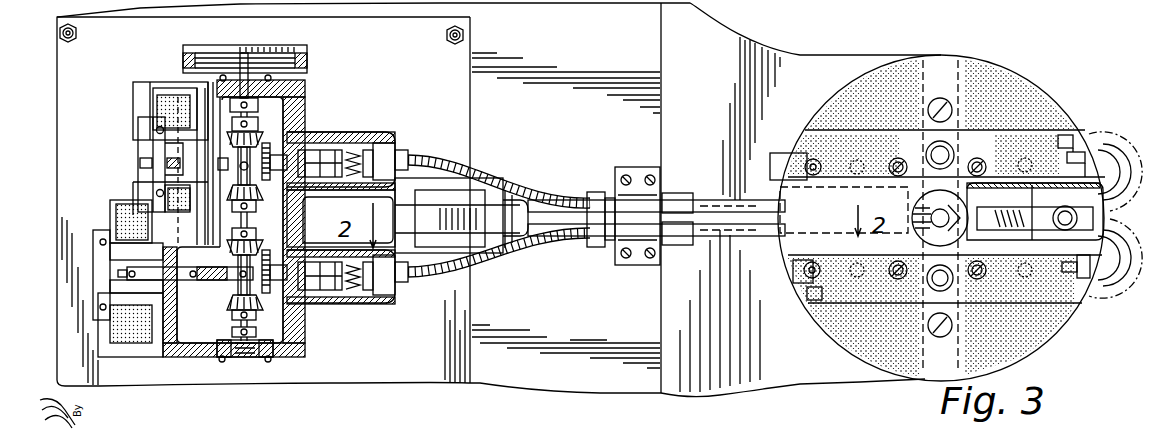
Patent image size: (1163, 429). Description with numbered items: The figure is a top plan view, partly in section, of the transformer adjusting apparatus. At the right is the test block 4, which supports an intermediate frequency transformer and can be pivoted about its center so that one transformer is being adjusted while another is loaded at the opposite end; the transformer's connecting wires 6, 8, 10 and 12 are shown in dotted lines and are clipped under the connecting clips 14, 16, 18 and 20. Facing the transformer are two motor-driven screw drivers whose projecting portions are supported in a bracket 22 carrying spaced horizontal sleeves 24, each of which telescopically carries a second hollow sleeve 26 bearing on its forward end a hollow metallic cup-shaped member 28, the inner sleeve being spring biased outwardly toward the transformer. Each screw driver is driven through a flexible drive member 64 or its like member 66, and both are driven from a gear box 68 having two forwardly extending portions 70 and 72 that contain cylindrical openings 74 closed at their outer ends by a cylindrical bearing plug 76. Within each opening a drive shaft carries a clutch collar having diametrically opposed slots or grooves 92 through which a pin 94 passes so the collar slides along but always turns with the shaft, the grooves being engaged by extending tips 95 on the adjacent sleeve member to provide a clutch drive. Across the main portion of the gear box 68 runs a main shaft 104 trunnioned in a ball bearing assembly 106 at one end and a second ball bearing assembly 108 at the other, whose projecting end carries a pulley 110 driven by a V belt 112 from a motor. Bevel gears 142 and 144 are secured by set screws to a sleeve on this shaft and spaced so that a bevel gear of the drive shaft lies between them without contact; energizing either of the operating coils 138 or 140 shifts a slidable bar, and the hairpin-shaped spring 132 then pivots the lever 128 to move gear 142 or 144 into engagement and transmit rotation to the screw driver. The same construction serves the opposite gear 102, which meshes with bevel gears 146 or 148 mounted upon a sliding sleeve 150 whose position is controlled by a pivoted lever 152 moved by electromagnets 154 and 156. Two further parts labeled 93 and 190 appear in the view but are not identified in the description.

The test block 4 is at (1050, 337).
The connecting wire 6 is at (1140, 150).
The connecting wire 8 is at (1130, 210).
The connecting wire 10 is at (1150, 236).
The connecting wire 12 is at (1118, 272).
The connecting clip 14 is at (1068, 132).
The connecting clip 16 is at (1090, 160).
The connecting clip 18 is at (1075, 268).
The connecting clip 20 is at (1080, 290).
The bracket 22 is at (640, 265).
The horizontal sleeve 24 is at (685, 235).
The second hollow sleeve 26 is at (717, 200).
The cup-shaped member 28 is at (760, 200).
The flexible drive member 64 is at (512, 257).
The flexible driving member 66 is at (518, 190).
The gear box 68 is at (303, 347).
The forwardly extending portion 70 is at (375, 303).
The forwardly extending portion 72 is at (322, 170).
The cylindrical opening 74 is at (384, 143).
The cylindrical bearing plug 76 is at (388, 148).
The diametrically opposed grooves 92 is at (320, 172).
The upper piston 93 is at (330, 165).
The pin 94 is at (335, 303).
The extending tips 95 is at (316, 188).
The bevel gear 102 is at (283, 160).
The main shaft 104 is at (230, 323).
The ball bearing assembly 106 is at (240, 360).
The second ball bearing assembly 108 is at (241, 78).
The pulley 110 is at (285, 53).
The V belt 112 is at (303, 58).
The lever 128 is at (170, 152).
The spring 132 is at (140, 163).
The operating coil 138 is at (112, 215).
The operating coil 140 is at (132, 340).
The bevel gear 142 is at (227, 300).
The bevel gear 144 is at (240, 243).
The bevel gear 146 is at (253, 133).
The bevel gear 148 is at (248, 200).
The sliding sleeve 150 is at (240, 152).
The pivoted lever 152 is at (218, 165).
The electromagnet 154 is at (170, 97).
The electromagnet 156 is at (170, 210).
The cavity wall 190 is at (318, 222).